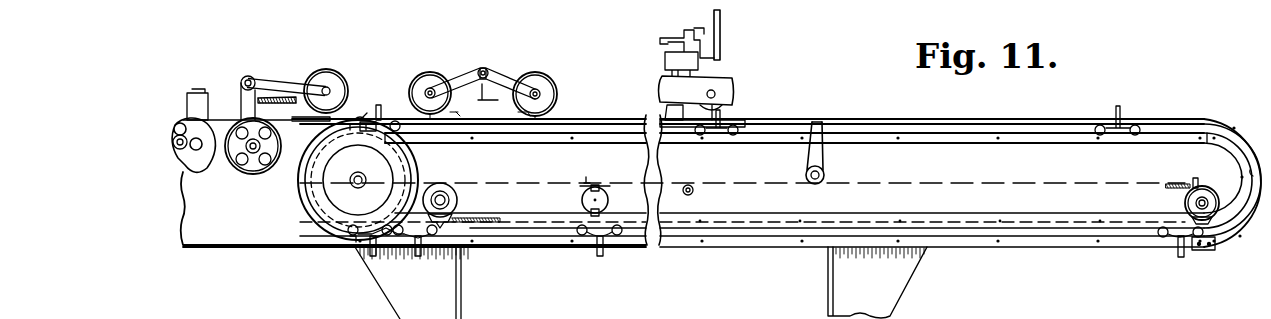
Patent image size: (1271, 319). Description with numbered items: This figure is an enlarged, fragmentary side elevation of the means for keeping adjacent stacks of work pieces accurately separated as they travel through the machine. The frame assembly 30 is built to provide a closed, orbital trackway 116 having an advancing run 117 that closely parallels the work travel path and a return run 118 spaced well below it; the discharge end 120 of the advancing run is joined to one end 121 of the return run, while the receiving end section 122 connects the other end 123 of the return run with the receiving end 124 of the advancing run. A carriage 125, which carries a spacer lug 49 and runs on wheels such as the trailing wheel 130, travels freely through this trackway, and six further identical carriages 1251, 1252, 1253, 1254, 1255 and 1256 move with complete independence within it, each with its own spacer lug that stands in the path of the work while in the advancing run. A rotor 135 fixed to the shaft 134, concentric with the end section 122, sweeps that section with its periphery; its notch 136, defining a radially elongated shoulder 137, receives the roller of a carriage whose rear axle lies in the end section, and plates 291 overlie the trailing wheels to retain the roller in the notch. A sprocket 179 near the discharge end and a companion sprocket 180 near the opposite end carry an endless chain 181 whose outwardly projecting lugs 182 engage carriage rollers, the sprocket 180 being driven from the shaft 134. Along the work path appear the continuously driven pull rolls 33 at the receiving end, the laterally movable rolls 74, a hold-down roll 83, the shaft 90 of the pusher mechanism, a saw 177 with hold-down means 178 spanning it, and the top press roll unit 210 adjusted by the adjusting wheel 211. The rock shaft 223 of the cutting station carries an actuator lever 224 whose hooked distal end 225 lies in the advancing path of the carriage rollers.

The frame assembly 30 is at (210, 236).
The pull rolls 33 is at (231, 166).
The spacer lug 49 is at (380, 104).
The rolls 74 is at (182, 106).
The hold-down roll 83 is at (332, 72).
The shaft 90 is at (582, 200).
The trackway 116 is at (1119, 254).
The advancing run 117 is at (1020, 130).
The return run 118 is at (978, 236).
The discharge end 120 is at (1216, 130).
The end of return run 121 is at (1215, 248).
The receiving end section 122 is at (306, 181).
The other end of return run 123 is at (384, 247).
The receiving end 124 is at (402, 132).
The carriage 125 is at (396, 120).
The trailing wheel 130 is at (368, 118).
The shaft 134 is at (356, 185).
The rotor 135 is at (410, 182).
The notch 136 is at (362, 131).
The shoulder 137 is at (362, 120).
The saw 177 is at (502, 102).
The hold-down means 178 is at (502, 63).
The sprocket 179 is at (1184, 200).
The companion sprocket 180 is at (457, 201).
The endless chain 181 is at (1178, 182).
The lugs 182 is at (1197, 178).
The top press roll unit 210 is at (732, 82).
The adjusting wheel 211 is at (722, 32).
The rock shaft 223 is at (815, 184).
The actuator lever 224 is at (820, 155).
The distal end 225 is at (819, 120).
The plates 291 is at (298, 118).
The carriage 1251 is at (738, 112).
The carriage 1252 is at (1122, 126).
The carriage 1253 is at (1178, 246).
The carriage 1254 is at (608, 242).
The carriage 1255 is at (428, 246).
The carriage 1256 is at (362, 245).